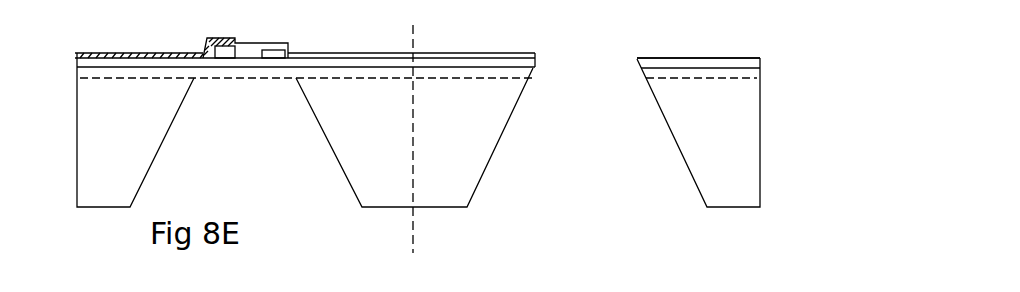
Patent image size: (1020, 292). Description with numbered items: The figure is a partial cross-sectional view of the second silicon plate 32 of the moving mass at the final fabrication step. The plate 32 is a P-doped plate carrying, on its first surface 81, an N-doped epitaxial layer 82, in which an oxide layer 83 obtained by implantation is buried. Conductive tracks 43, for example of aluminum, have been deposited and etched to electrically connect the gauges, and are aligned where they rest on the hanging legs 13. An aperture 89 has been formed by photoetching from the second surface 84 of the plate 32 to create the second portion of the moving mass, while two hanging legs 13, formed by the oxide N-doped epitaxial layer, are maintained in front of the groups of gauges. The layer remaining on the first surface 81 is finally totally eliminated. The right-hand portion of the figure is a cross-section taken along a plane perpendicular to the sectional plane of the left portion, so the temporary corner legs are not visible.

The tracks 43 is at (124, 52).
The oxide layer 83 is at (447, 62).
The hanging legs 13 is at (240, 76).
The second surface 84 is at (97, 207).
The aperture 89 is at (599, 177).
The second silicon plate 32 is at (773, 137).
The first surface 81 is at (733, 54).
The N-doped epitaxial layer 82 is at (762, 73).